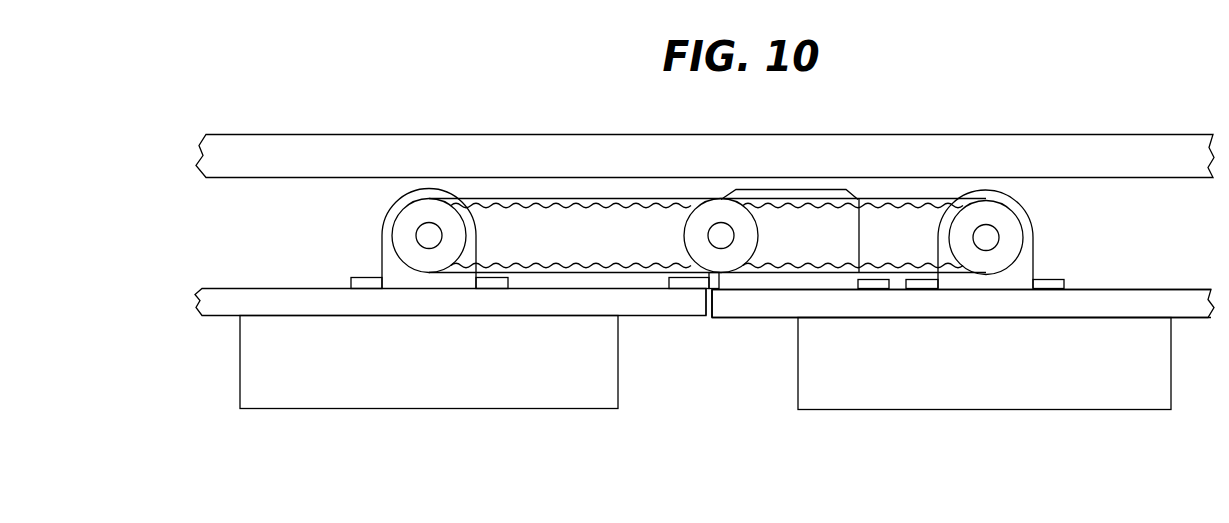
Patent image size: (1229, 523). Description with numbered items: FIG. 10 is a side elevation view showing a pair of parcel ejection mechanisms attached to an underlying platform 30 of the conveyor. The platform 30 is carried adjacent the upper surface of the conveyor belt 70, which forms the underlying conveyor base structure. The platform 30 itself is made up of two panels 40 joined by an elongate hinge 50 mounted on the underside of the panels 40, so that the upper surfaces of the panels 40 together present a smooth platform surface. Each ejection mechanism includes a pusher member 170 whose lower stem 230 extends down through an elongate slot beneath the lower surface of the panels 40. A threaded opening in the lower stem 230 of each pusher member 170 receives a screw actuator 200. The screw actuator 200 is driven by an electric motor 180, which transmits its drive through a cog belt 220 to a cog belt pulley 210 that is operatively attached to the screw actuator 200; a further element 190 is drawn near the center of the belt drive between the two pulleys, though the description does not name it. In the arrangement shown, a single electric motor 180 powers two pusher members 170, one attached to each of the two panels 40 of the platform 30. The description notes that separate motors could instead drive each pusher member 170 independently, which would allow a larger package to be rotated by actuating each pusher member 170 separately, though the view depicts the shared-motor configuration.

The conveyor belt 70 is at (268, 130).
The screw actuator 200 is at (424, 229).
The cog belt pulley 210 is at (403, 193).
The cog belt 220 is at (555, 198).
The drive pulley 190 is at (693, 225).
The electric motor 180 is at (790, 187).
The lower stem 230 is at (382, 253).
The elongate hinge 50 is at (682, 283).
The platform 30 is at (767, 298).
The panel 40 is at (645, 313).
The pusher member 170 is at (465, 406).